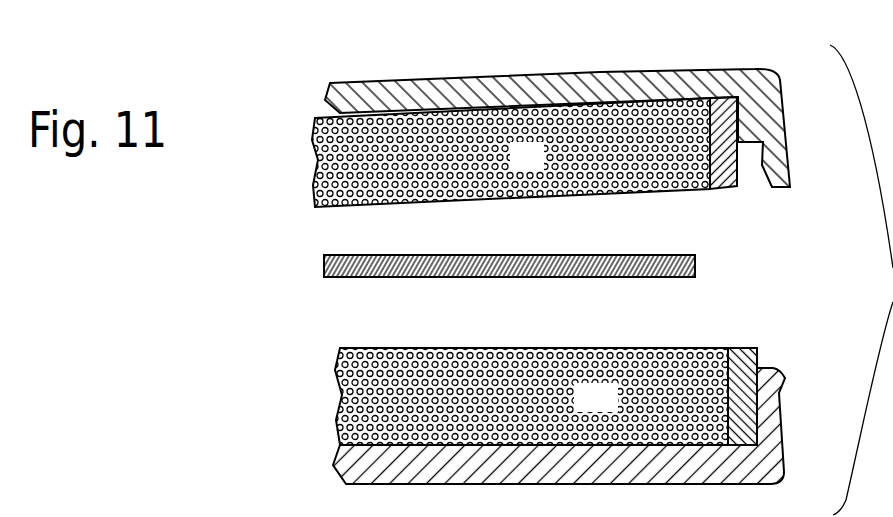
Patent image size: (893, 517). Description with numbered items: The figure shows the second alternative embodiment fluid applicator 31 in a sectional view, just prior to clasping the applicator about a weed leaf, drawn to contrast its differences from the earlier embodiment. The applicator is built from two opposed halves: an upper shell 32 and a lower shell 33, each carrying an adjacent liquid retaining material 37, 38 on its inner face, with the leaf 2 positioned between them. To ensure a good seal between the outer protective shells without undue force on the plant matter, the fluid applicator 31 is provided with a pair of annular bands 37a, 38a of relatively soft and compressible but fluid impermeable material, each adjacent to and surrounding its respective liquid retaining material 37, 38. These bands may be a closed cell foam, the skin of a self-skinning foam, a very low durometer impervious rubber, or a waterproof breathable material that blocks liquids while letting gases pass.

The second alternative embodiment fluid applicator 31 is at (323, 78).
The upper housing shell 32 is at (627, 70).
The liquid retaining material 37 is at (541, 169).
The annular band 37a is at (728, 188).
The circuit board 2 is at (400, 278).
The liquid retaining material 38 is at (614, 410).
The annular band 38a is at (745, 348).
The lower housing shell 33 is at (600, 484).